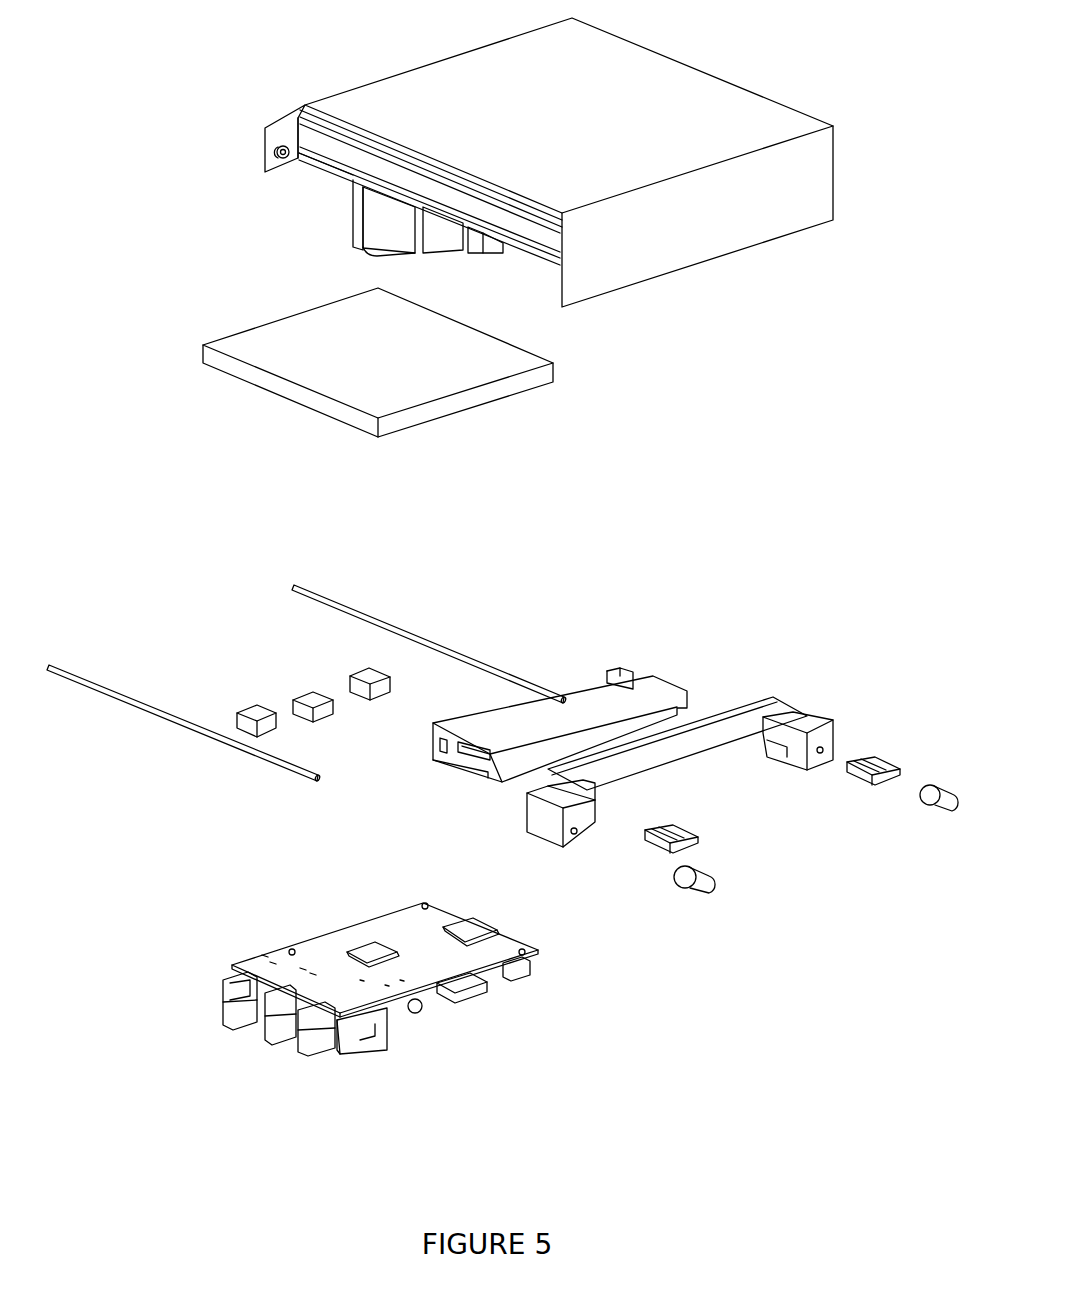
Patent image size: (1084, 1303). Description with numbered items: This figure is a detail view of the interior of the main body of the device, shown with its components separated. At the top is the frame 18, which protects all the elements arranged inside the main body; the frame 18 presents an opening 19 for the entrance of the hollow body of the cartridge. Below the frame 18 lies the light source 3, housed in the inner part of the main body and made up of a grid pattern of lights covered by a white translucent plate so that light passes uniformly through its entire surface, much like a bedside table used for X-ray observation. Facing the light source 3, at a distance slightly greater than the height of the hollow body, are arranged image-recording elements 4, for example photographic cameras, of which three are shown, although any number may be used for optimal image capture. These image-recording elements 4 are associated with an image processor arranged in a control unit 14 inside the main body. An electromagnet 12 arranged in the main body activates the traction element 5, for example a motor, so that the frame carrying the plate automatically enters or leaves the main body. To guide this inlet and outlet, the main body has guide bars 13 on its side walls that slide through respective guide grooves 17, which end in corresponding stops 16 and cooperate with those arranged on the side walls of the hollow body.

The frame 18 is at (616, 97).
The opening 19 is at (309, 191).
The light source 3 is at (443, 365).
The guide bars 13 is at (112, 676).
The image-recording element 4 is at (274, 698).
The traction element 5 is at (814, 720).
The electromagnet 12 is at (530, 816).
The guide grooves 17 is at (704, 844).
The stops 16 is at (925, 809).
The control unit 14 is at (475, 1015).